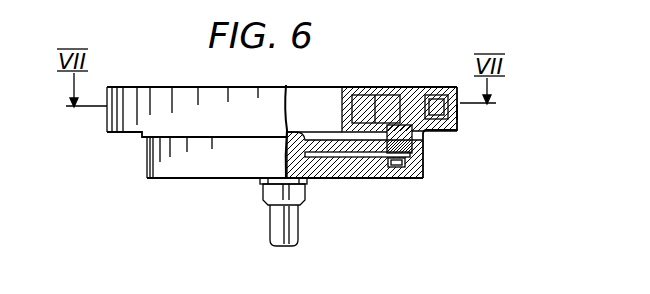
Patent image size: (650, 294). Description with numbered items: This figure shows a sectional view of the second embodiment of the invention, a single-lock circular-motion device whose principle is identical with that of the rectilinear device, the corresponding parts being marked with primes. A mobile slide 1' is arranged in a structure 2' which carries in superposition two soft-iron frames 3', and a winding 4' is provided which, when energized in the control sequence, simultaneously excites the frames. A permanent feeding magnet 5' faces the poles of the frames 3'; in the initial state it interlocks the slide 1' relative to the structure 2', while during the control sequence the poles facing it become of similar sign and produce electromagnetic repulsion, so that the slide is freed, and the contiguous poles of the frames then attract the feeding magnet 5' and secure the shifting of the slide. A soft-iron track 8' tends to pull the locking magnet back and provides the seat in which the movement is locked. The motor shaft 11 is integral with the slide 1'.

The mobile slide 1' is at (354, 177).
The structure 2' is at (433, 78).
The soft-iron frame 3' is at (398, 85).
The winding 4' is at (490, 125).
The feeding magnet 5' is at (418, 149).
The soft-iron track 8' is at (408, 190).
The motor shaft 11 is at (292, 228).